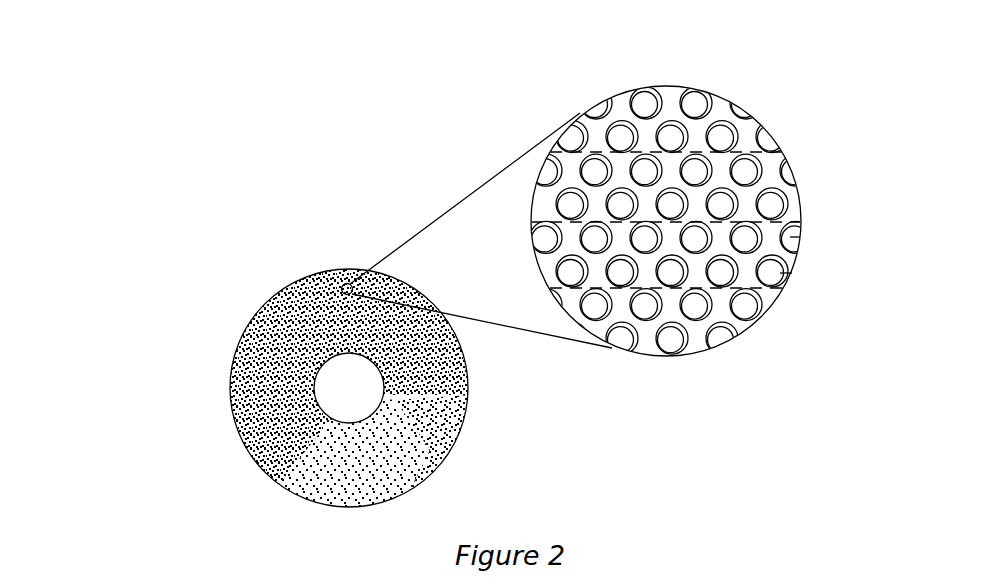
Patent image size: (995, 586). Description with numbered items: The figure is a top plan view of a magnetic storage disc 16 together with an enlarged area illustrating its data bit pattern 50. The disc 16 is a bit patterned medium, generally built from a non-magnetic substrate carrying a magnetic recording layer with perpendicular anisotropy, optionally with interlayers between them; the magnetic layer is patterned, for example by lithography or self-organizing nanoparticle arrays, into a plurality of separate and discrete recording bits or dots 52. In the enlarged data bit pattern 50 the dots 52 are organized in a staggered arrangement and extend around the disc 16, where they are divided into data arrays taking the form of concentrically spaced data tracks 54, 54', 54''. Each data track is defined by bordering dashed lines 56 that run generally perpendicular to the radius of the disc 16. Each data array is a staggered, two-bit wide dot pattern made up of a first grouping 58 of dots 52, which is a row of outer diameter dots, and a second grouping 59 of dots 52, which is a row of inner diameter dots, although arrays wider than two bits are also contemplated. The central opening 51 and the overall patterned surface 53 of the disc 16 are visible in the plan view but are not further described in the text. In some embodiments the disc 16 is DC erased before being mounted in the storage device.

The magnetic storage disc 16 is at (335, 323).
The data bit pattern 50 is at (660, 209).
The center hole 51 is at (347, 387).
The dots 52 is at (641, 95).
The abrasive surface 53 is at (255, 318).
The data track 54 is at (680, 132).
The data track 54' is at (706, 200).
The data track 54'' is at (634, 270).
The dashed lines 56 is at (556, 160).
The first grouping of dots 58 is at (815, 237).
The second grouping of dots 59 is at (803, 273).